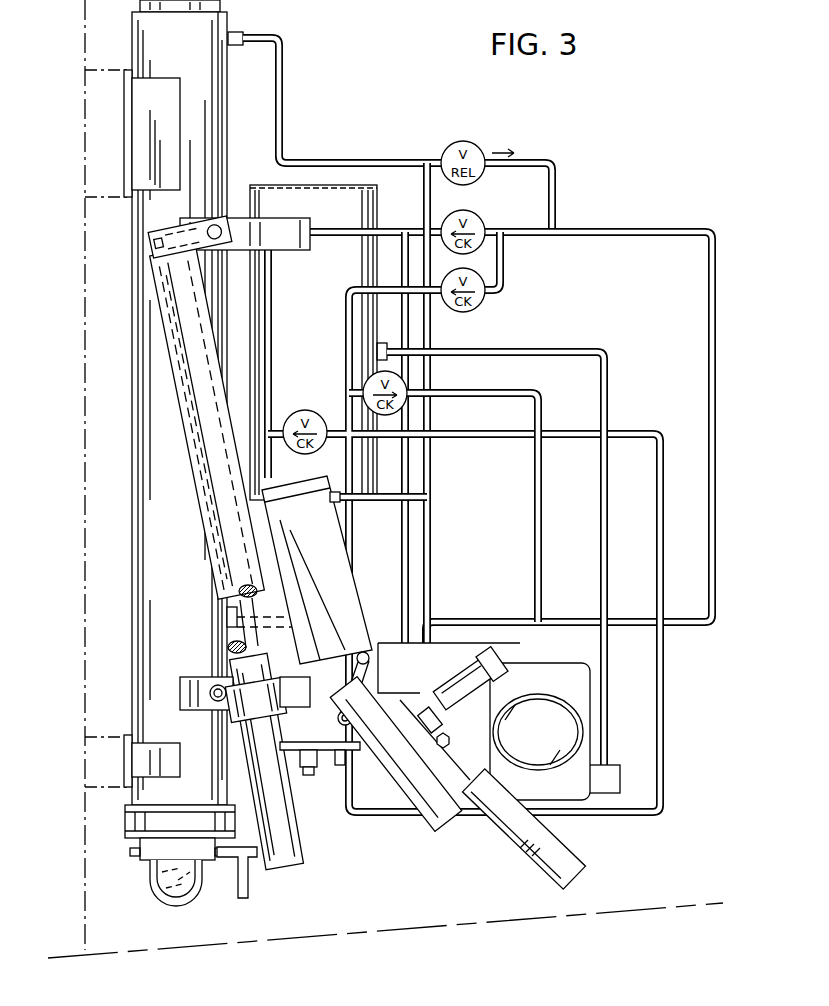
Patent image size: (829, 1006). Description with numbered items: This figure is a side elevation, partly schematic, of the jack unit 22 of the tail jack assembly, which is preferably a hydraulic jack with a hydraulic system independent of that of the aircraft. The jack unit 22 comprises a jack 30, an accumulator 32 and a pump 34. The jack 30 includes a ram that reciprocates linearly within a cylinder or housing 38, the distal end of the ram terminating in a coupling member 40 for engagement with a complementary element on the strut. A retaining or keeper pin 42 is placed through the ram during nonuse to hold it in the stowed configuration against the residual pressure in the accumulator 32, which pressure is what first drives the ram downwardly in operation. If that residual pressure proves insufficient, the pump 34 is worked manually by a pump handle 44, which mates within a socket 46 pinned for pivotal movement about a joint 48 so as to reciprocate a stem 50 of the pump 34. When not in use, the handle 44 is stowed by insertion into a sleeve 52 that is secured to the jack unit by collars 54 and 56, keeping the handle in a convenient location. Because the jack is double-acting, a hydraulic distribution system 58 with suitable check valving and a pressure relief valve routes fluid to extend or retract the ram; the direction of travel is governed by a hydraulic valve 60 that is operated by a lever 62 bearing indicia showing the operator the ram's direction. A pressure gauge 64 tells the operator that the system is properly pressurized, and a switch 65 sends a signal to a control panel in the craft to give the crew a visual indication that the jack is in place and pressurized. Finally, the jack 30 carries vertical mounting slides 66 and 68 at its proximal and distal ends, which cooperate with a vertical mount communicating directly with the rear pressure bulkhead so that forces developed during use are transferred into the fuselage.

The jack unit 22 is at (552, 135).
The jack 30 is at (135, 570).
The accumulator 32 is at (377, 200).
The pump 34 is at (330, 482).
The cylinder or housing 38 is at (218, 142).
The coupling member 40 is at (158, 872).
The retaining or keeper pin 42 is at (262, 883).
The pump handle 44 is at (293, 835).
The socket 46 is at (440, 825).
The joint 48 is at (372, 660).
The stem 50 is at (333, 760).
The sleeve 52 is at (180, 420).
The collar 54 is at (228, 685).
The collar 56 is at (210, 228).
The hydraulic distribution system 58 is at (718, 490).
The hydraulic valve 60 is at (455, 643).
The lever 62 is at (515, 860).
The pressure gauge 64 is at (552, 665).
The switch 65 is at (495, 665).
The vertical mounting slide 66 is at (128, 88).
The vertical mounting slide 68 is at (128, 737).